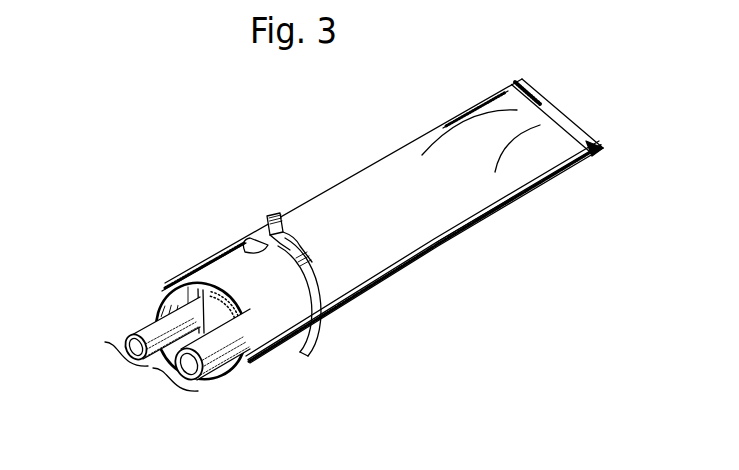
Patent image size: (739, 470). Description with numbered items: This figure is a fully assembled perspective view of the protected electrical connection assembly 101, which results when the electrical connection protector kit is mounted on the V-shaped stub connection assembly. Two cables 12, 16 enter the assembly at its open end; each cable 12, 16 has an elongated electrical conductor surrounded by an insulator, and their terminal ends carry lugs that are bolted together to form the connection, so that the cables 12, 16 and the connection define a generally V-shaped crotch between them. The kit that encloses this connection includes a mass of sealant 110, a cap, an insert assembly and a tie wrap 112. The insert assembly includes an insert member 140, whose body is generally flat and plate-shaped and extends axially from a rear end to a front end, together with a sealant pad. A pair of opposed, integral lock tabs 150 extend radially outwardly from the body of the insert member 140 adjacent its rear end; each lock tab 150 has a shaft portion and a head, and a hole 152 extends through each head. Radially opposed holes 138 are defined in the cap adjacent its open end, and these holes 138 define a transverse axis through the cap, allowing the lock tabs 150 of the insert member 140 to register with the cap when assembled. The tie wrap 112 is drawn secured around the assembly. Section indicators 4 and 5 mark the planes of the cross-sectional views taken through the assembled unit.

The protected electrical connection assembly 101 is at (232, 150).
The mass of sealant 110 is at (172, 285).
The tie wrap 112 is at (323, 300).
The cable 12 is at (150, 332).
The cable 16 is at (208, 380).
The radially opposed holes 138 is at (264, 245).
The insert member 140 is at (245, 378).
The lock tabs 150 is at (265, 227).
The hole 152 is at (247, 240).
The section line 4 is at (599, 128).
The section line 5 is at (376, 153).